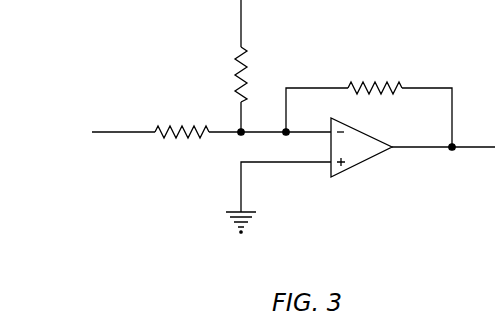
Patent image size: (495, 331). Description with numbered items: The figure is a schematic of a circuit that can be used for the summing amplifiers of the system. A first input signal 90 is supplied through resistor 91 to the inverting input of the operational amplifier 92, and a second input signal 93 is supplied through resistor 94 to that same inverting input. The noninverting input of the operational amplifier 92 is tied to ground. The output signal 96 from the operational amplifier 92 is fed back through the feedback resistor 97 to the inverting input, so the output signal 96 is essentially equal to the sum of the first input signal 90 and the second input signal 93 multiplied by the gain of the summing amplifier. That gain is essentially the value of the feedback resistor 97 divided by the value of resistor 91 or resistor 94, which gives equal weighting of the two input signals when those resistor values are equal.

The first input signal 90 is at (118, 132).
The resistor 91 is at (176, 139).
The operational amplifier 92 is at (358, 168).
The second input signal 93 is at (241, 26).
The resistor 94 is at (236, 78).
The output signal 96 is at (421, 149).
The feedback resistor 97 is at (373, 88).